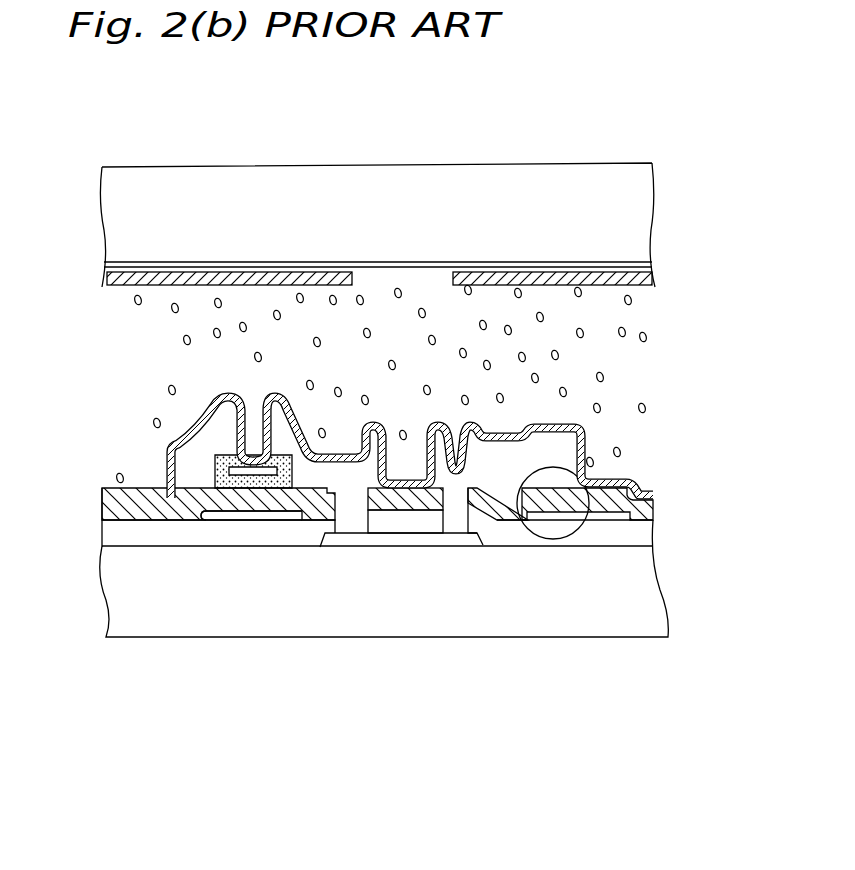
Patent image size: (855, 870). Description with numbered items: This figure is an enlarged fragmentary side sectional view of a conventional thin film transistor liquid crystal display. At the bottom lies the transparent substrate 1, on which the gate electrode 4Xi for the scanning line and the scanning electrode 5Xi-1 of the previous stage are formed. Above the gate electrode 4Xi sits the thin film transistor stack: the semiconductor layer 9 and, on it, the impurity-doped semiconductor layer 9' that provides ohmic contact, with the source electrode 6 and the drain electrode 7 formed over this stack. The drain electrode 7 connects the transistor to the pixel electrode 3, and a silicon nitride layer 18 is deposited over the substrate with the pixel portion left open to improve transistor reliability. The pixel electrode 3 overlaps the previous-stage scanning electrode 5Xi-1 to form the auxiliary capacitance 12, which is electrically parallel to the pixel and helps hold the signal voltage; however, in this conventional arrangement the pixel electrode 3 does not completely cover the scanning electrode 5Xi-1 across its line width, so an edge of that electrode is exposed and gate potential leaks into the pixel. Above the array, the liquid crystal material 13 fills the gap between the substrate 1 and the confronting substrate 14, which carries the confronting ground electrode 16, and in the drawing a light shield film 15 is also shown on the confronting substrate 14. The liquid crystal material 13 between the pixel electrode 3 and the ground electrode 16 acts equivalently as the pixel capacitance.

The substrate 1 is at (600, 598).
The pixel electrode 3 is at (397, 542).
The gate electrode 4Xi is at (245, 517).
The scanning electrode at the previous stage 5Xi-1 is at (617, 478).
The source electrode 6 is at (207, 438).
The drain electrode 7 is at (277, 417).
The semiconductor layer 9 is at (183, 522).
The impurity-doped semiconductor layer 9' is at (175, 463).
The auxiliary capacitance 12 is at (620, 530).
The liquid crystal material 13 is at (604, 377).
The confronting substrate 14 is at (610, 196).
The light shield film 15 is at (104, 272).
The confronting ground electrode 16 is at (620, 266).
The SiNx layer 18 is at (650, 490).